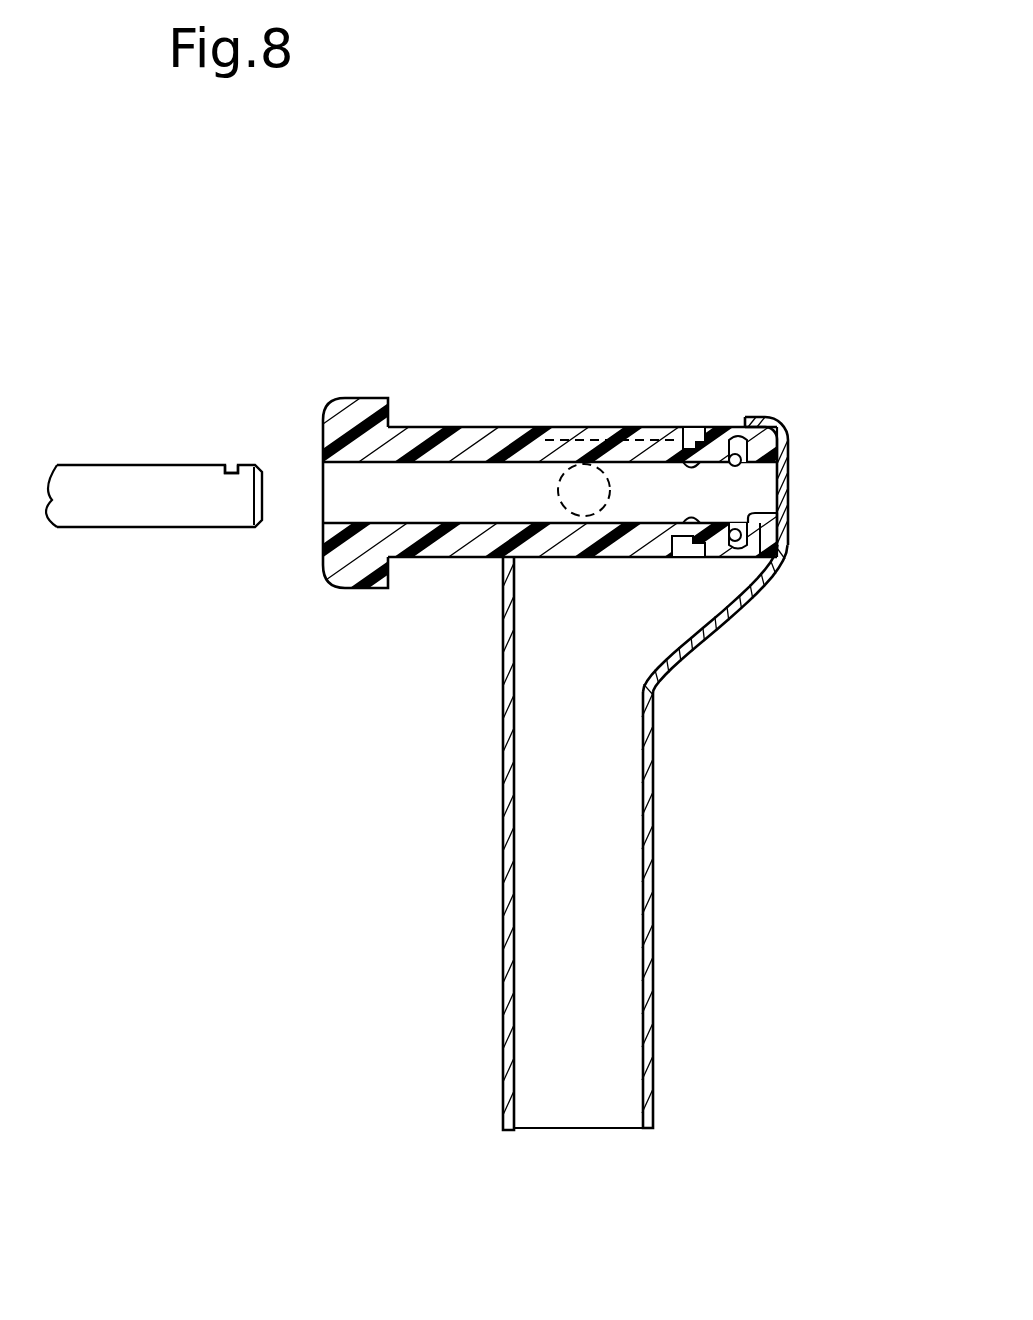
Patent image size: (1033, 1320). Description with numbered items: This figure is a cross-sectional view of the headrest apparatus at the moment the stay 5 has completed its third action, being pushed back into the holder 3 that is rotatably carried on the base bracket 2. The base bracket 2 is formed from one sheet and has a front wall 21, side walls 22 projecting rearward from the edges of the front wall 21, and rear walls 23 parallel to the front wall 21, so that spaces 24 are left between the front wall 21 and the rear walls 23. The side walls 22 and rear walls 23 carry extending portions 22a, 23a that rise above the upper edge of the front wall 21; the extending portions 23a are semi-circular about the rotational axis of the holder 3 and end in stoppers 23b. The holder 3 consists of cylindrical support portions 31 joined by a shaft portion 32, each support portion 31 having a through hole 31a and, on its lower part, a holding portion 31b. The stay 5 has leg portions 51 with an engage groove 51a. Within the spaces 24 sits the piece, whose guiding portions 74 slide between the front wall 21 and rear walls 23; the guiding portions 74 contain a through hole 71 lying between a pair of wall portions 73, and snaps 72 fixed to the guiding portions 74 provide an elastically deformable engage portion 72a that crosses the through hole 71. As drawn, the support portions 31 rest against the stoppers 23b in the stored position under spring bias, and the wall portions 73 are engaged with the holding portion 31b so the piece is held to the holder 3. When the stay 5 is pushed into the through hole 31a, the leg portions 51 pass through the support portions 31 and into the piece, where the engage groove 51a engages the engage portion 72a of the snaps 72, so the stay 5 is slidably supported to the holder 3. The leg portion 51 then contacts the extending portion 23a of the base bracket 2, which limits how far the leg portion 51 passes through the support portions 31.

The base bracket 2 is at (631, 716).
The front wall 21 is at (508, 862).
The side walls 22 is at (747, 668).
The extending portions 22a is at (718, 600).
The rear walls 23 is at (647, 920).
The extending portions 23a is at (727, 638).
The stoppers 23b is at (765, 417).
The spaces 24 is at (592, 900).
The holder 3 is at (562, 513).
The support portions 31 is at (472, 437).
The through hole 31a is at (470, 518).
The holding portion 31b is at (705, 427).
The shaft portion 32 is at (572, 480).
The stay 5 is at (163, 493).
The leg portions 51 is at (137, 508).
The engage groove 51a is at (232, 468).
The through hole 71 is at (753, 514).
The snaps 72 is at (736, 545).
The engage portion 72a is at (745, 470).
The wall portions 73 is at (683, 557).
The guiding portions 74 is at (770, 540).